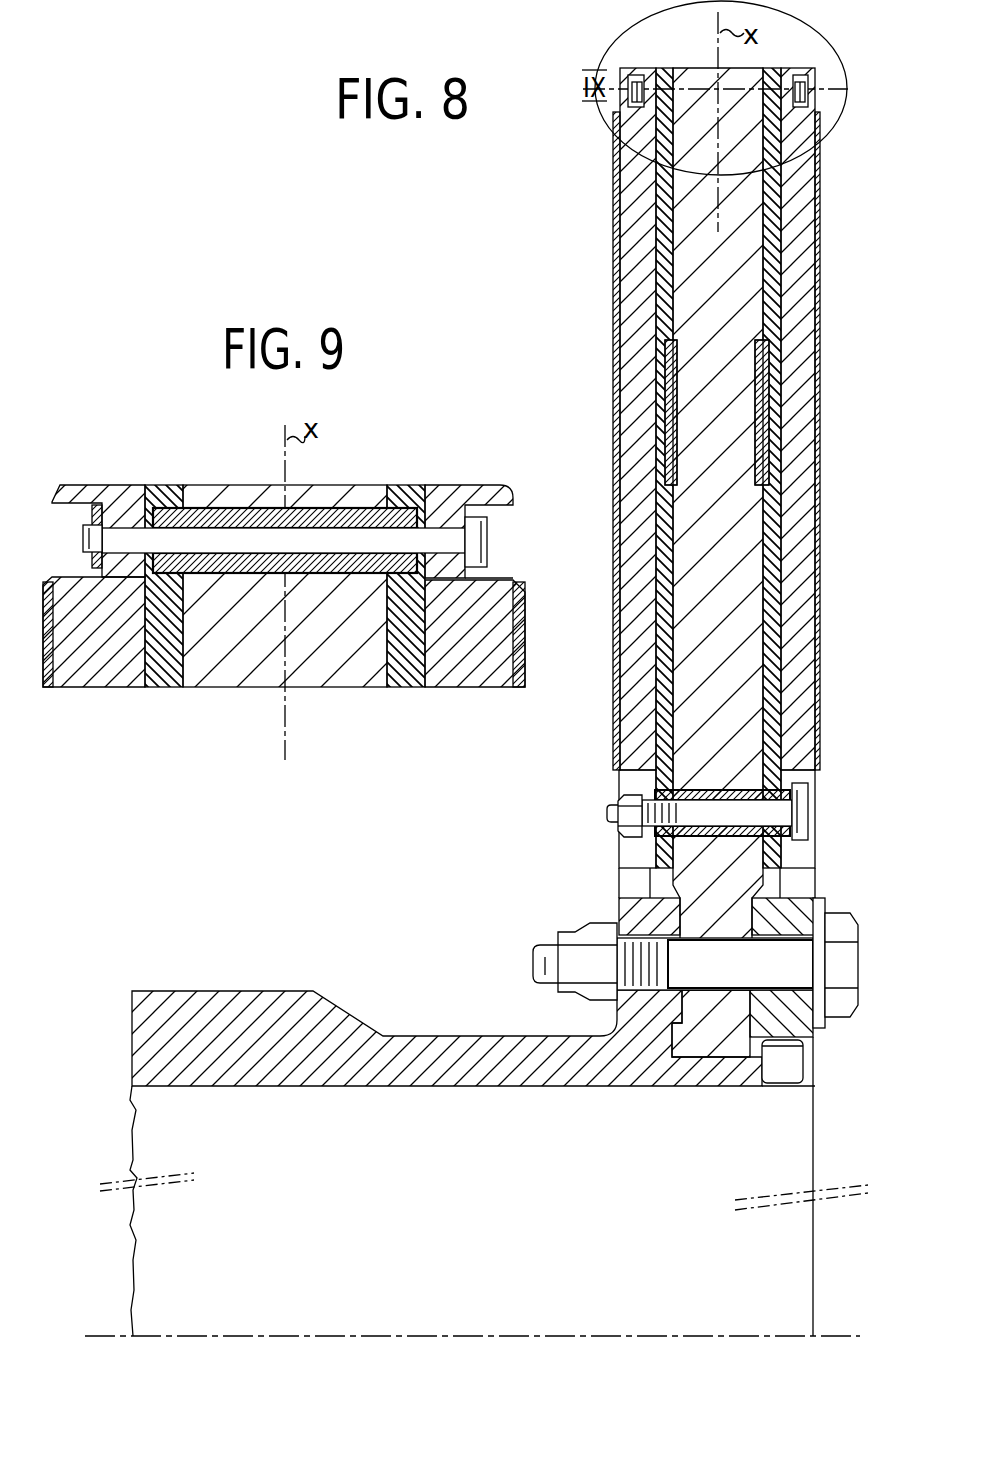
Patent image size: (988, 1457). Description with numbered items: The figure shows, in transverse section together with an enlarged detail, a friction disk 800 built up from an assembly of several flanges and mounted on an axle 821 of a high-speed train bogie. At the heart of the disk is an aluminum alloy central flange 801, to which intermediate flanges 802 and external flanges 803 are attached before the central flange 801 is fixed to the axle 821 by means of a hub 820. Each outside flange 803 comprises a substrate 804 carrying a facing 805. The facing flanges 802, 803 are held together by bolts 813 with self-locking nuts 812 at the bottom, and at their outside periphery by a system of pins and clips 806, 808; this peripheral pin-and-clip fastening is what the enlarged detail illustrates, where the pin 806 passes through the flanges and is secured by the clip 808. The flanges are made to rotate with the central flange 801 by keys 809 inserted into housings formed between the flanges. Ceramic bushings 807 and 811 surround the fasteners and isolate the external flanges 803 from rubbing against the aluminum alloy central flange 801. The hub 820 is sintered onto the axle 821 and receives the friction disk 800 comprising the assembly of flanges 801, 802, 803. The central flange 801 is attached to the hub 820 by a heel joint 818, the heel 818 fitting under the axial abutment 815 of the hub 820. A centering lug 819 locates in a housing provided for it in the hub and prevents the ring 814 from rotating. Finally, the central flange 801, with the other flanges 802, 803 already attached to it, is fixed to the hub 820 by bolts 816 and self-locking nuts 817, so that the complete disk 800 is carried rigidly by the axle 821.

In FIG. 8, the friction disk 800 is at (600, 173).
In FIG. 9, the friction disk 800 is at (166, 474).
In FIG. 8, the central flange 801 is at (698, 102).
In FIG. 9, the central flange 801 is at (307, 690).
In FIG. 8, the intermediate flange 802 is at (663, 237).
In FIG. 9, the intermediate flange 802 is at (166, 688).
In FIG. 8, the external flange 803 is at (633, 293).
In FIG. 9, the external flange 803 is at (301, 643).
In FIG. 9, the substrate 804 is at (485, 630).
In FIG. 9, the facing 805 is at (418, 713).
In FIG. 9, the pin 806 is at (88, 520).
In FIG. 9, the ceramic bushing 807 is at (322, 510).
In FIG. 9, the clip 808 is at (477, 538).
In FIG. 8, the key 809 is at (672, 382).
In FIG. 8, the ceramic bushing 811 is at (708, 790).
In FIG. 8, the self-locking nut 812 is at (612, 812).
In FIG. 8, the bolt 813 is at (805, 810).
In FIG. 8, the ring 814 is at (795, 907).
In FIG. 8, the axial abutment 815 is at (637, 915).
In FIG. 8, the bolt 816 is at (843, 925).
In FIG. 8, the self-locking nut 817 is at (597, 958).
In FIG. 8, the heel joint 818 is at (697, 1042).
In FIG. 8, the centering lug 819 is at (790, 1062).
In FIG. 8, the hub 820 is at (722, 1090).
In FIG. 8, the axle 821 is at (768, 1243).